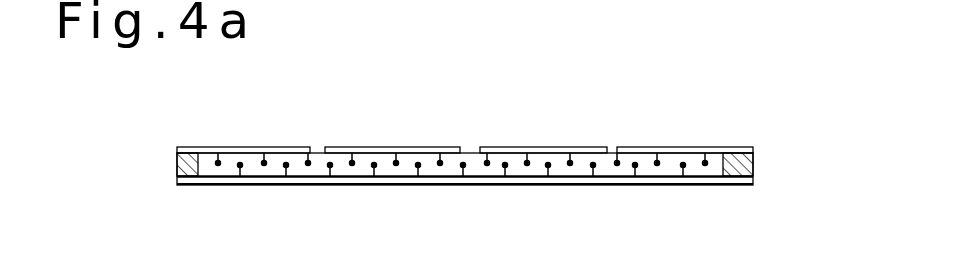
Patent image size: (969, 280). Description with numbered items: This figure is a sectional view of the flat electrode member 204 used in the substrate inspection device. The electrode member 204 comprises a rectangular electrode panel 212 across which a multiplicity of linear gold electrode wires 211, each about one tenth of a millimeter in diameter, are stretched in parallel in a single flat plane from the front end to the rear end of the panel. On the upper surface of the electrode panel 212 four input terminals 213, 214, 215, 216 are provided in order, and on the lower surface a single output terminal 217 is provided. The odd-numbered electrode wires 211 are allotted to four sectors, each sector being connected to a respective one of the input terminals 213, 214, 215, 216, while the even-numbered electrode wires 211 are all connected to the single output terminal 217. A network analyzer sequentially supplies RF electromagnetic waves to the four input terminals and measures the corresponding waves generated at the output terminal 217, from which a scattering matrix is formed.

The electrode member 204 is at (771, 114).
The electrode wires 211 is at (710, 166).
The electrode panel 212 is at (755, 166).
The input terminal 213 is at (636, 152).
The input terminal 214 is at (487, 150).
The input terminal 215 is at (332, 150).
The input terminal 216 is at (187, 150).
The output terminal 217 is at (555, 187).